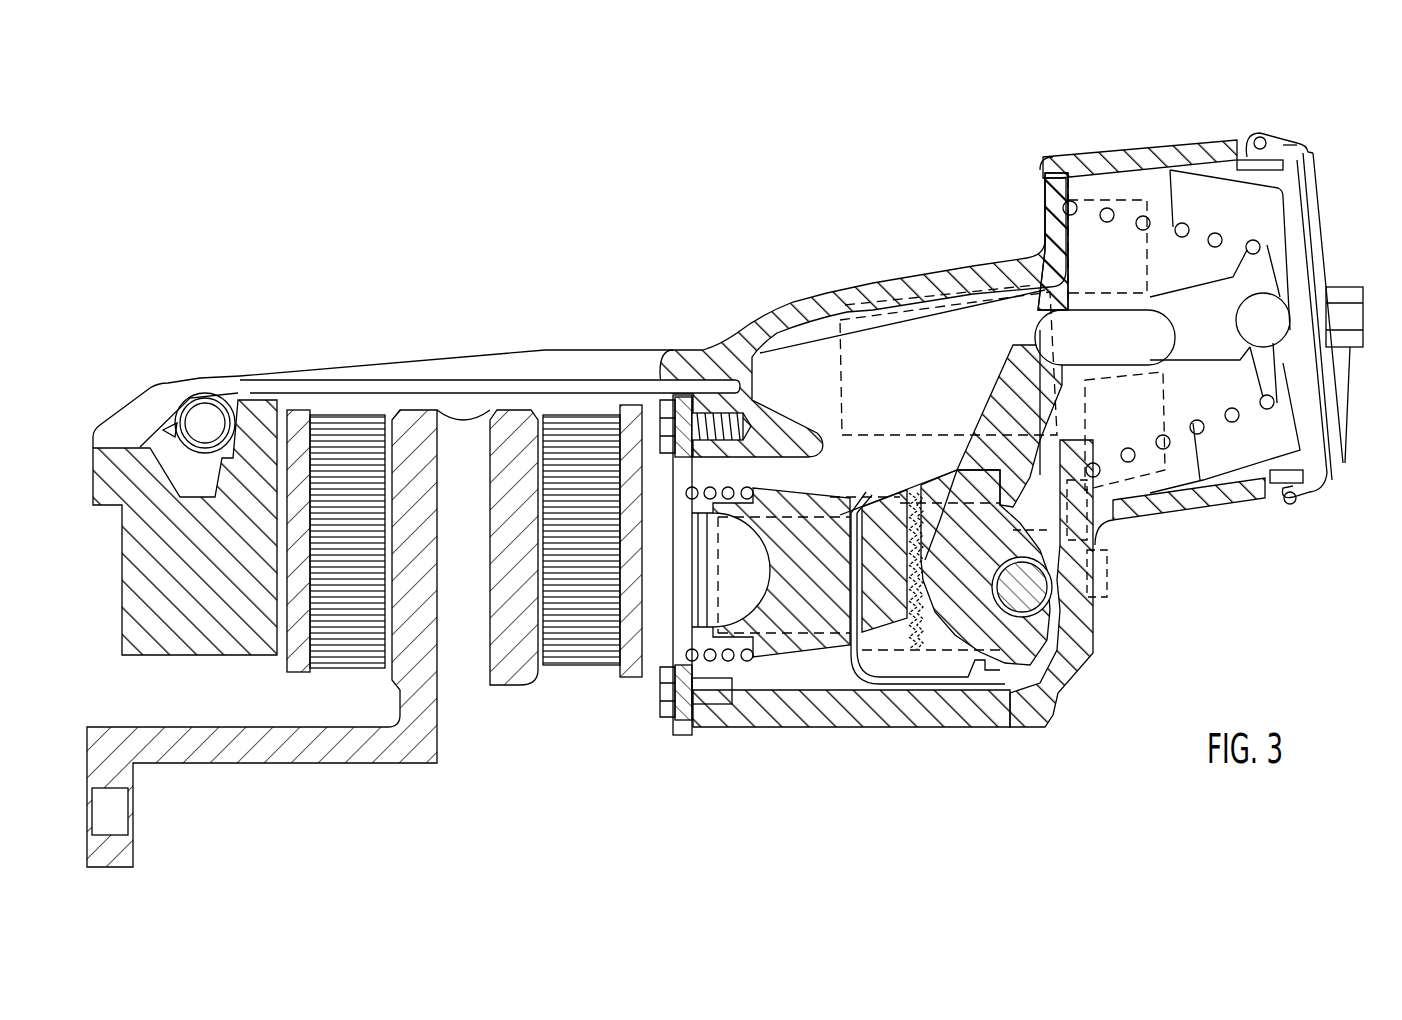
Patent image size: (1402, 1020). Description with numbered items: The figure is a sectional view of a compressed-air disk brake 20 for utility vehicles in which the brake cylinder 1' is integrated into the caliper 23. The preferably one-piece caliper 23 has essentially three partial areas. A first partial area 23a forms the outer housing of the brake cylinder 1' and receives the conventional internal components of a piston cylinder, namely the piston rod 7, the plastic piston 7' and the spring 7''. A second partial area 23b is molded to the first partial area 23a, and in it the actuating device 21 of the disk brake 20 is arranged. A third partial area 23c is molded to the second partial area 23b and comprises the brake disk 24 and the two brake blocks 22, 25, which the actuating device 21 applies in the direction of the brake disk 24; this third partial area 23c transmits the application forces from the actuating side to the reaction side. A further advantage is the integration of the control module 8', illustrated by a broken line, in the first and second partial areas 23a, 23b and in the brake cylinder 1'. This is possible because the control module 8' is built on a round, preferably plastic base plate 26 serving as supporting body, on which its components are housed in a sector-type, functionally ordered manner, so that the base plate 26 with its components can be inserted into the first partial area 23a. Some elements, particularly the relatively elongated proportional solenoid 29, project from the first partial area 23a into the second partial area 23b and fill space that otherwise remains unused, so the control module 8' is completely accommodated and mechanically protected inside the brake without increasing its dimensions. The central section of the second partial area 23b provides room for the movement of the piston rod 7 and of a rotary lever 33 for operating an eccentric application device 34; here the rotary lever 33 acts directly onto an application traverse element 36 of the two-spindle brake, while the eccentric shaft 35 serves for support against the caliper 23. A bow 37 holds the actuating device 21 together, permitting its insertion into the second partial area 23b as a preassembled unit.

The brake cylinder 1' is at (1185, 89).
The piston rod 7 is at (1192, 331).
The plastic piston 7' is at (1297, 295).
The spring 7'' is at (1168, 277).
The control module 8' is at (902, 289).
The compressed-air disk brake 20 is at (600, 313).
The actuating device 21 is at (815, 670).
The brake block 22 is at (330, 435).
The caliper 23 is at (1000, 218).
The first partial area 23a is at (1210, 155).
The second partial area 23b is at (965, 275).
The third partial area 23c is at (140, 565).
The brake disk 24 is at (415, 430).
The brake block 25 is at (573, 430).
The base plate 26 is at (1055, 175).
The proportional solenoid 29 is at (853, 342).
The rotary lever 33 is at (1000, 447).
The eccentric application device 34 is at (1118, 610).
The eccentric shaft 35 is at (1022, 616).
The application traverse element 36 is at (827, 600).
The bow 37 is at (1338, 292).